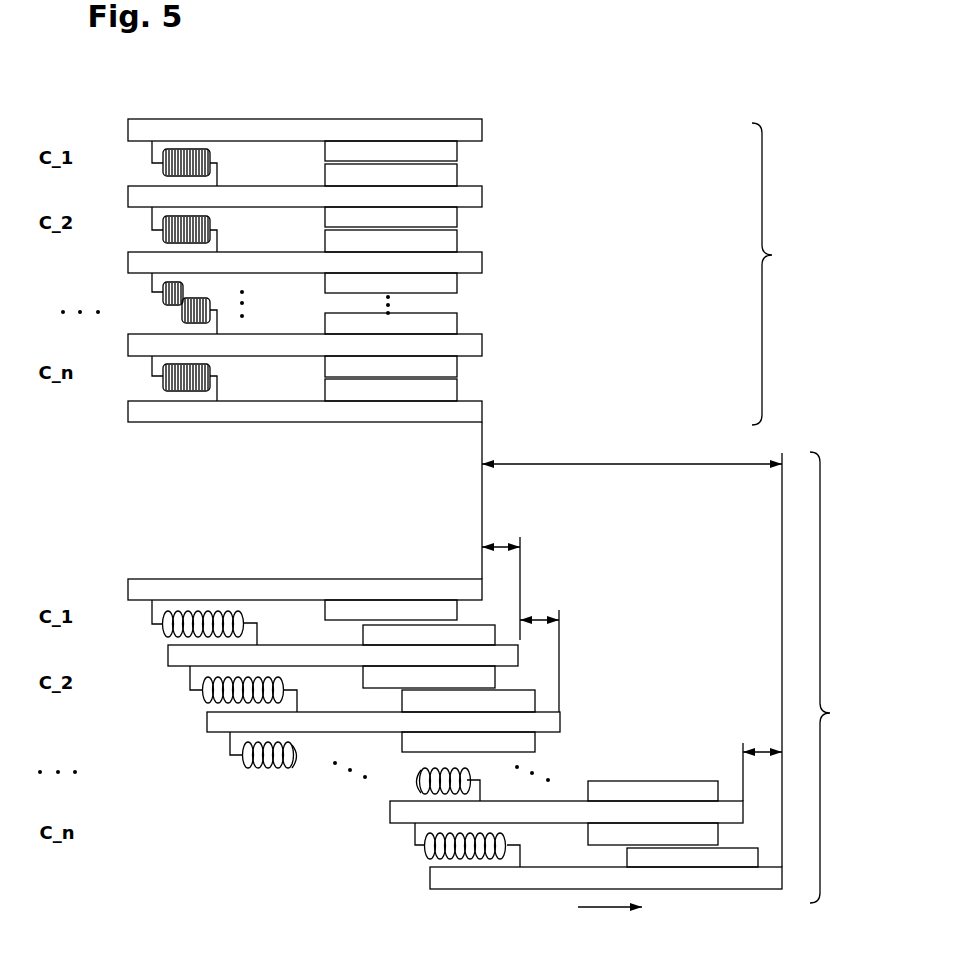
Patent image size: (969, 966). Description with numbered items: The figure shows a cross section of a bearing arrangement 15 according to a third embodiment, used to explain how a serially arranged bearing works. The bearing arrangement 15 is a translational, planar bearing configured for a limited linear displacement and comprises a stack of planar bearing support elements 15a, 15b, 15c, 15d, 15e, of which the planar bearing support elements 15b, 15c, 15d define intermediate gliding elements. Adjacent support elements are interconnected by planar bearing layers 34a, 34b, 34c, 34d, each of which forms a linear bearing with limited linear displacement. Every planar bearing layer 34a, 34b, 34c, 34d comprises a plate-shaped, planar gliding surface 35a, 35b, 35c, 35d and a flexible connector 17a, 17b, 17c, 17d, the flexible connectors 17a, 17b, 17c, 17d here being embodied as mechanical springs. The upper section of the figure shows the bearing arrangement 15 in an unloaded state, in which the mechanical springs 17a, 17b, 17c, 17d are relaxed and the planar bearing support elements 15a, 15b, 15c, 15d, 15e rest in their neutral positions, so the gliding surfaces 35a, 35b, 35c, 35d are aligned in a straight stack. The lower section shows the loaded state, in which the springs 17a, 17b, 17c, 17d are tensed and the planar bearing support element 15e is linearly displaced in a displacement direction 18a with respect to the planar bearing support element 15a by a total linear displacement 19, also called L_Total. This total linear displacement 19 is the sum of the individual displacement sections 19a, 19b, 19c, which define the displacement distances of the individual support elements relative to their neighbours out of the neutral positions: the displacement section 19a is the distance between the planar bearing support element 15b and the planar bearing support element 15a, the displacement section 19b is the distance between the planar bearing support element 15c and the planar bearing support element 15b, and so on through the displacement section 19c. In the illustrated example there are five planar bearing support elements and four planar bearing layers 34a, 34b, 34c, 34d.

The bearing arrangement 15 is at (610, 228).
The planar bearing support element 15a is at (470, 132).
The planar bearing support element 15b is at (470, 198).
The planar bearing support element 15c is at (470, 264).
The planar bearing support element 15d is at (470, 346).
The planar bearing support element 15e is at (470, 412).
The flexible connector 17a is at (163, 168).
The flexible connector 17b is at (163, 235).
The flexible connector 17c is at (163, 303).
The flexible connector 17d is at (163, 385).
The gliding surface 35a is at (468, 163).
The gliding surface 35b is at (468, 232).
The gliding surface 35c is at (468, 303).
The gliding surface 35d is at (468, 378).
The planar bearing layer 34a is at (318, 161).
The planar bearing layer 34b is at (318, 228).
The planar bearing layer 34c is at (318, 303).
The planar bearing layer 34d is at (318, 378).
The total linear displacement 19 is at (686, 466).
The displacement section 19a is at (505, 549).
The displacement section 19b is at (545, 625).
The displacement section 19c is at (760, 752).
The displacement direction 18a is at (605, 908).